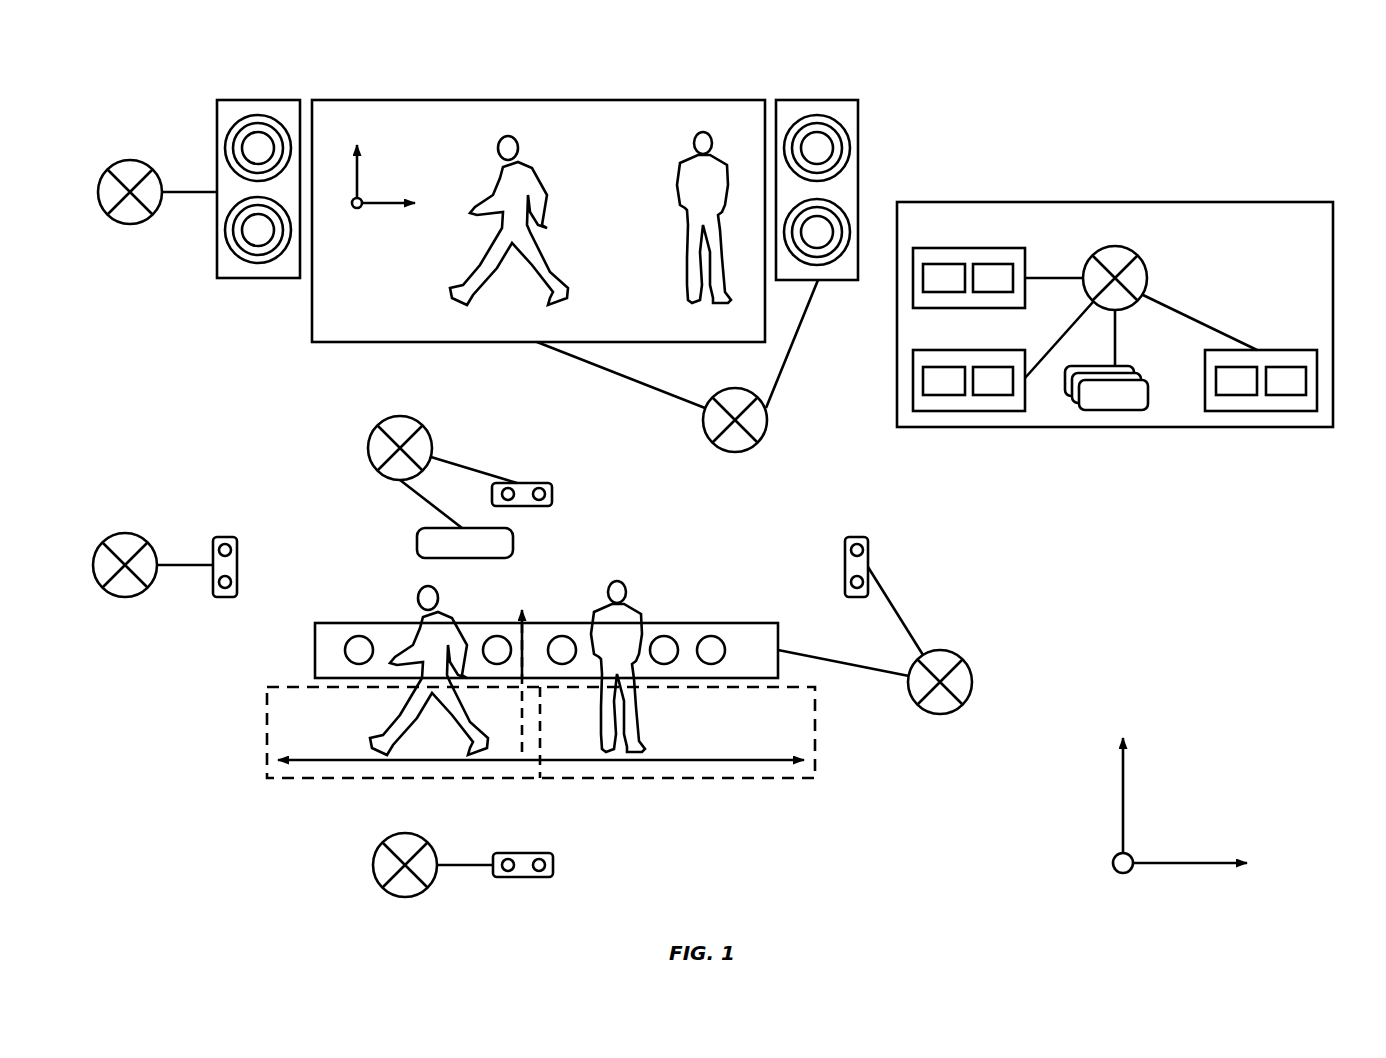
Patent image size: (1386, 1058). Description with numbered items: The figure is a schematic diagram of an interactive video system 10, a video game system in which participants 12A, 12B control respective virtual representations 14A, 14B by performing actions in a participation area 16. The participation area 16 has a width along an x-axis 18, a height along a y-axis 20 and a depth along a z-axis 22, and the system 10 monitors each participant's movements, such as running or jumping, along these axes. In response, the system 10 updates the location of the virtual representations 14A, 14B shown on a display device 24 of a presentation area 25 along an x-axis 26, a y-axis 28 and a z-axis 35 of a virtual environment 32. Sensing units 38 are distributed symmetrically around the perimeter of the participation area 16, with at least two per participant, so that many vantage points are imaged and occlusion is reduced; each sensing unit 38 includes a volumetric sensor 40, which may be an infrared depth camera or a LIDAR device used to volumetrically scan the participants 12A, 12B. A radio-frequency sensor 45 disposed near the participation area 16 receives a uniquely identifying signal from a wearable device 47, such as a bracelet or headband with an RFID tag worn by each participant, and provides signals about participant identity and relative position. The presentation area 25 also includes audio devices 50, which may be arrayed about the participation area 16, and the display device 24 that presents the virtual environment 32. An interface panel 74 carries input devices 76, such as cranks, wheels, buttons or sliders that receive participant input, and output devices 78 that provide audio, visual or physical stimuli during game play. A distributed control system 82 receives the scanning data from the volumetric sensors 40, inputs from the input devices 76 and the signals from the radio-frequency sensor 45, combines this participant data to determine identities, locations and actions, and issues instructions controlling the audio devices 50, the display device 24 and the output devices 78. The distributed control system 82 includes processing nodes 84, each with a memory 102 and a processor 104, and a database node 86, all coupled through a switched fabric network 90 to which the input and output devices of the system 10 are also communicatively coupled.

The interactive video system 10 is at (539, 191).
The participant 12A is at (405, 598).
The participant 12B is at (648, 605).
The virtual representation 14A is at (532, 162).
The virtual representation 14B is at (683, 138).
The participation area 16 is at (722, 790).
The x-axis 18 is at (1212, 865).
The y-axis 20 is at (1125, 800).
The z-axis 22 is at (1131, 855).
The display device 24 is at (540, 100).
The presentation area 25 is at (832, 82).
The x-axis 26 is at (402, 210).
The y-axis 28 is at (359, 172).
The virtual environment 32 is at (538, 200).
The z-axis 35 is at (362, 200).
The sensing unit 38 is at (575, 672).
The volumetric sensor 40 is at (546, 490).
The radio-frequency sensor 45 is at (513, 545).
The wearable device 47 is at (397, 648).
The audio device 50 is at (256, 279).
The interface panel 74 is at (315, 646).
The input device 76 is at (355, 636).
The output device 78 is at (494, 637).
The distributed control system 82 is at (1115, 202).
The processing node 84 is at (1114, 338).
The database node 86 is at (1113, 410).
The switched fabric network 90 is at (136, 162).
The memory 102 is at (947, 292).
The processor 104 is at (993, 264).